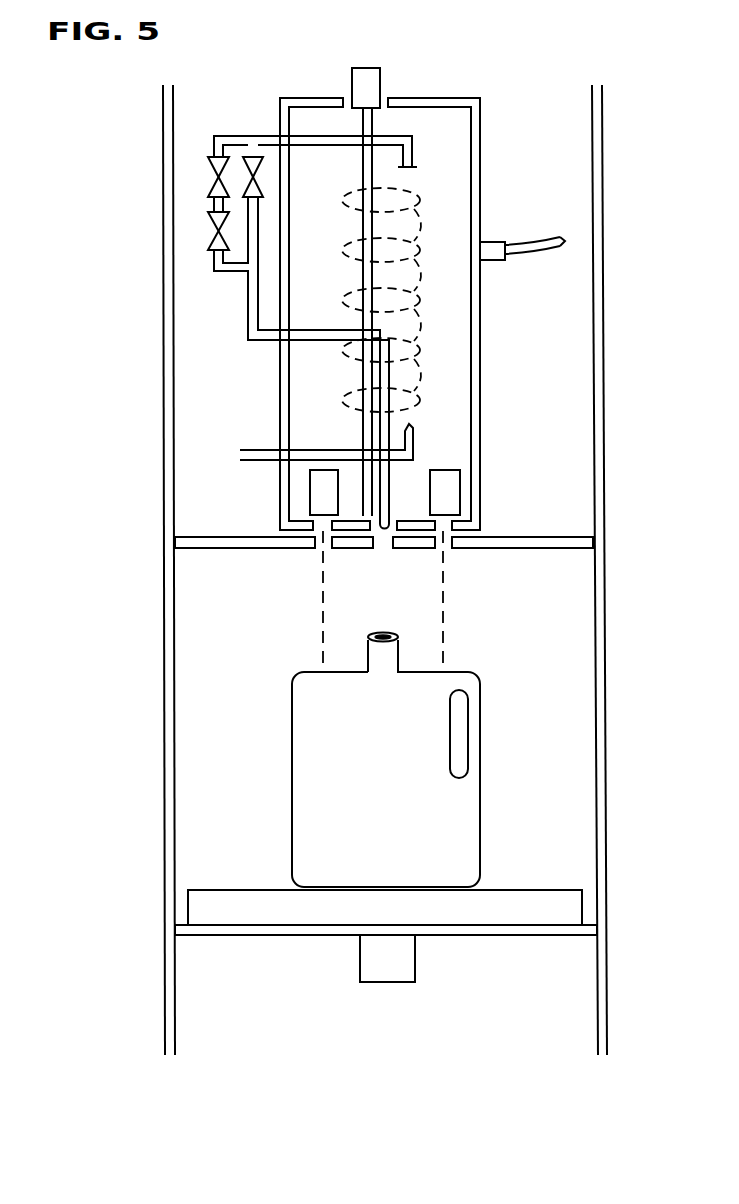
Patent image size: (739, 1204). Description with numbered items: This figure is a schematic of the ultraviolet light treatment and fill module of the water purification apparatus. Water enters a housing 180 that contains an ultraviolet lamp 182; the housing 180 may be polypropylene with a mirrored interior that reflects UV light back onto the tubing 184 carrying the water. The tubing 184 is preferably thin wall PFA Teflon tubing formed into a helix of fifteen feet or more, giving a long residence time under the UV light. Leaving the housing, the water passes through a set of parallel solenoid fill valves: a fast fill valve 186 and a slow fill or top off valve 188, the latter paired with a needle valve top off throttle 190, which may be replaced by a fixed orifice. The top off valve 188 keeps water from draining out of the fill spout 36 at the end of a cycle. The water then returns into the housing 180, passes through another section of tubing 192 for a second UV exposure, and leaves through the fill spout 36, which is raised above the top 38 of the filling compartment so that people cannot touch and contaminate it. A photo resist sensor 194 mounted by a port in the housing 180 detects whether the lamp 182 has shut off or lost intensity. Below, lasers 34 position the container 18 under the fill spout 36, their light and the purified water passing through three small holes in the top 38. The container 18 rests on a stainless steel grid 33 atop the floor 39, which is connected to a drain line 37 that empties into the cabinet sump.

The container 18 is at (410, 760).
The stainless steel grid 33 is at (385, 570).
The lasers 34 is at (310, 493).
The fill spout 36 is at (350, 450).
The drain line 37 is at (335, 969).
The top 38 is at (384, 574).
The floor 39 is at (245, 925).
The housing 180 is at (521, 292).
The ultraviolet lamp 182 is at (362, 128).
The tubing 184 is at (406, 314).
The fast fill valve 186 is at (262, 161).
The top off valve 188 is at (210, 167).
The needle valve top off throttle 190 is at (216, 219).
The tubing section 192 is at (377, 363).
The photo resist sensor 194 is at (522, 223).